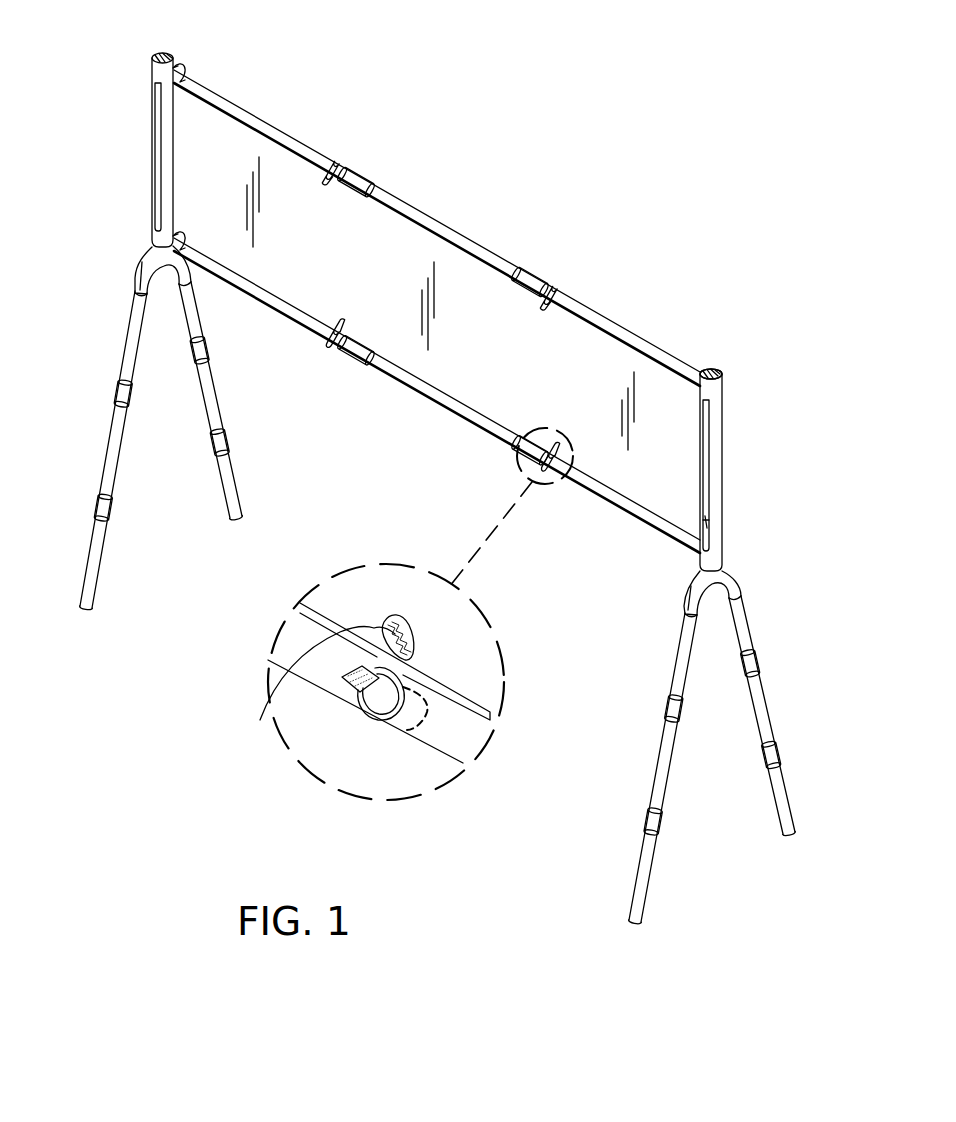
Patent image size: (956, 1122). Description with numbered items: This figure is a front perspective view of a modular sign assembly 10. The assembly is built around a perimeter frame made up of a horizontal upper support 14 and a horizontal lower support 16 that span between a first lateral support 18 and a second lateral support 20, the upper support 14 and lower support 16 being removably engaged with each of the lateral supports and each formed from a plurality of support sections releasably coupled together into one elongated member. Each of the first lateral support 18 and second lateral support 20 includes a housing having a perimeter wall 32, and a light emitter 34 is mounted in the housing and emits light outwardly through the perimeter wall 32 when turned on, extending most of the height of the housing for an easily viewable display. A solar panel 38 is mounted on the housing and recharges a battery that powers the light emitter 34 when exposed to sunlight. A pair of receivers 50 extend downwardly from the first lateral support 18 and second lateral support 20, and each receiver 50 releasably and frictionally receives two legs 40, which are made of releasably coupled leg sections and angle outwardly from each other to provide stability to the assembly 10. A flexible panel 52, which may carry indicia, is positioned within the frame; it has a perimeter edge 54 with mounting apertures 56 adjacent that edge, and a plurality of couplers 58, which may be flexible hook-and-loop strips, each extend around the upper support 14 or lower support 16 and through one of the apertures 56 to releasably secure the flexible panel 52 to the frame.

The modular sign assembly 10 is at (738, 130).
The upper support 14 is at (402, 200).
The lower support 16 is at (412, 392).
The first lateral support 18 is at (723, 455).
The second lateral support 20 is at (150, 58).
The perimeter wall 32 is at (722, 527).
The light emitter 34 is at (707, 412).
The solar panel 38 is at (716, 372).
The legs 40 is at (209, 481).
The receivers 50 is at (150, 262).
The flexible panel 52 is at (463, 648).
The perimeter edge 54 is at (492, 712).
The apertures 56 is at (283, 695).
The couplers 58 is at (379, 716).